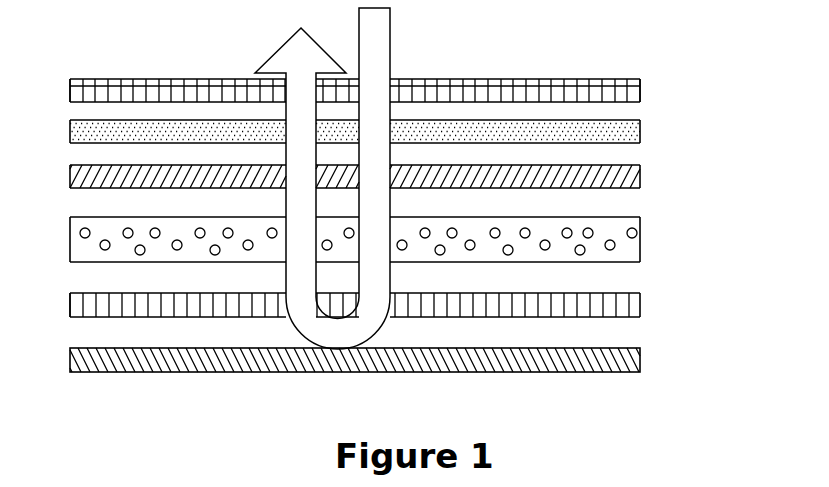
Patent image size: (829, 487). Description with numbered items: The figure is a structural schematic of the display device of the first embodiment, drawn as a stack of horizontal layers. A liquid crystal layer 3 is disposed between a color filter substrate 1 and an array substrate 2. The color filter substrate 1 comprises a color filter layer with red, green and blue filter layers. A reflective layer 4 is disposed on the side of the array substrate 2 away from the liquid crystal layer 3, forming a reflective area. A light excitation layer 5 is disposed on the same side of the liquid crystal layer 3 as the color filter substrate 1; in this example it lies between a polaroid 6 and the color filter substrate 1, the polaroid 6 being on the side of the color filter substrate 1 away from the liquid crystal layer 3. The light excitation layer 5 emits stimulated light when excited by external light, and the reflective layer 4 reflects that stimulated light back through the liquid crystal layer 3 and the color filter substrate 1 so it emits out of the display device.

The color filter substrate 1 is at (630, 177).
The array substrate 2 is at (628, 300).
The liquid crystal layer 3 is at (634, 230).
The reflective layer 4 is at (627, 362).
The light excitation layer 5 is at (630, 127).
The polaroid 6 is at (635, 85).